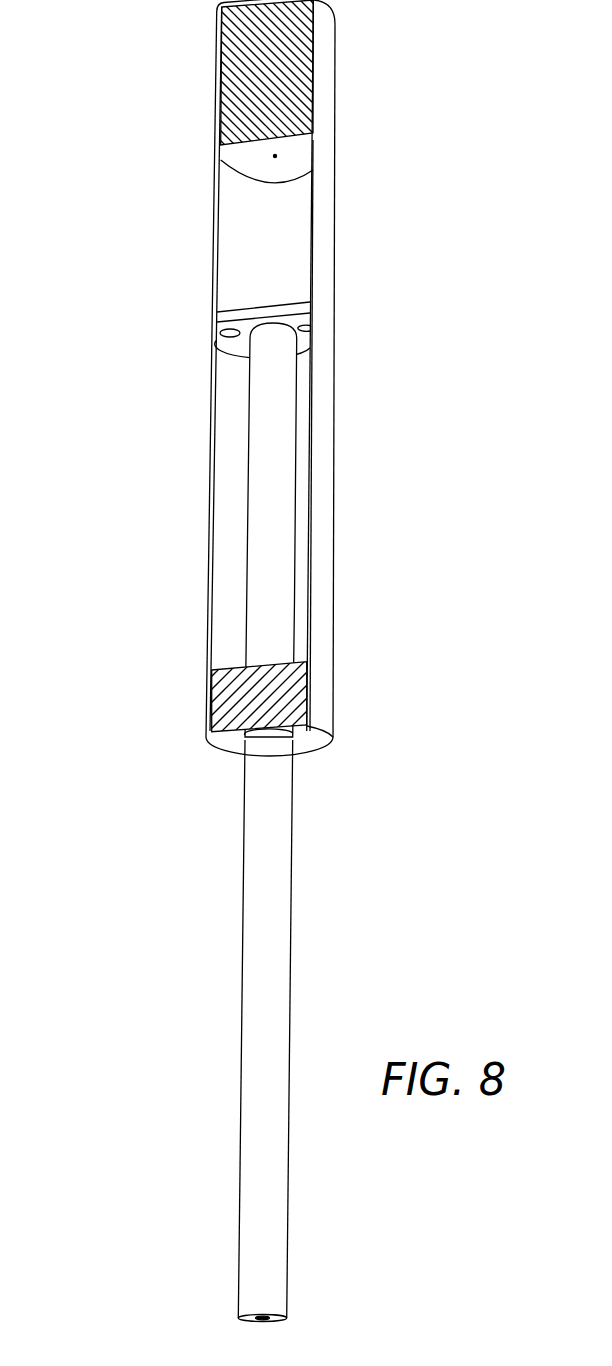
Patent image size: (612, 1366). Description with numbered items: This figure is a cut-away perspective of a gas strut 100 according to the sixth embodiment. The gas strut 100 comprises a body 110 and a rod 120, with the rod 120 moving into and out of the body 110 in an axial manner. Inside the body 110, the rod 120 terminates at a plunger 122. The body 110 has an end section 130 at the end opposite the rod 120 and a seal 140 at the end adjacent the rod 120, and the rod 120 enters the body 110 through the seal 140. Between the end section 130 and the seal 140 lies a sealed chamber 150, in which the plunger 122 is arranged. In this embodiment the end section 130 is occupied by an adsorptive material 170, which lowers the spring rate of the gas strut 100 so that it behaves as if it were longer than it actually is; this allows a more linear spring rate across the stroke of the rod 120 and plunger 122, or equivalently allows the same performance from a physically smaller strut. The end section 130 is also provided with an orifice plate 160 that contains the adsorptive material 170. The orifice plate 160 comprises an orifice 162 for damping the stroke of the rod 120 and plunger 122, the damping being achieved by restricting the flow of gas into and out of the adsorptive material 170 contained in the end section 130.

The gas strut 100 is at (93, 209).
The body 110 is at (333, 534).
The rod 120 is at (242, 1031).
The plunger 122 is at (297, 307).
The end section 130 is at (325, 63).
The seal 140 is at (237, 705).
The sealed chamber 150 is at (208, 511).
The orifice plate 160 is at (297, 158).
The orifice 162 is at (275, 156).
The adsorptive material 170 is at (248, 68).